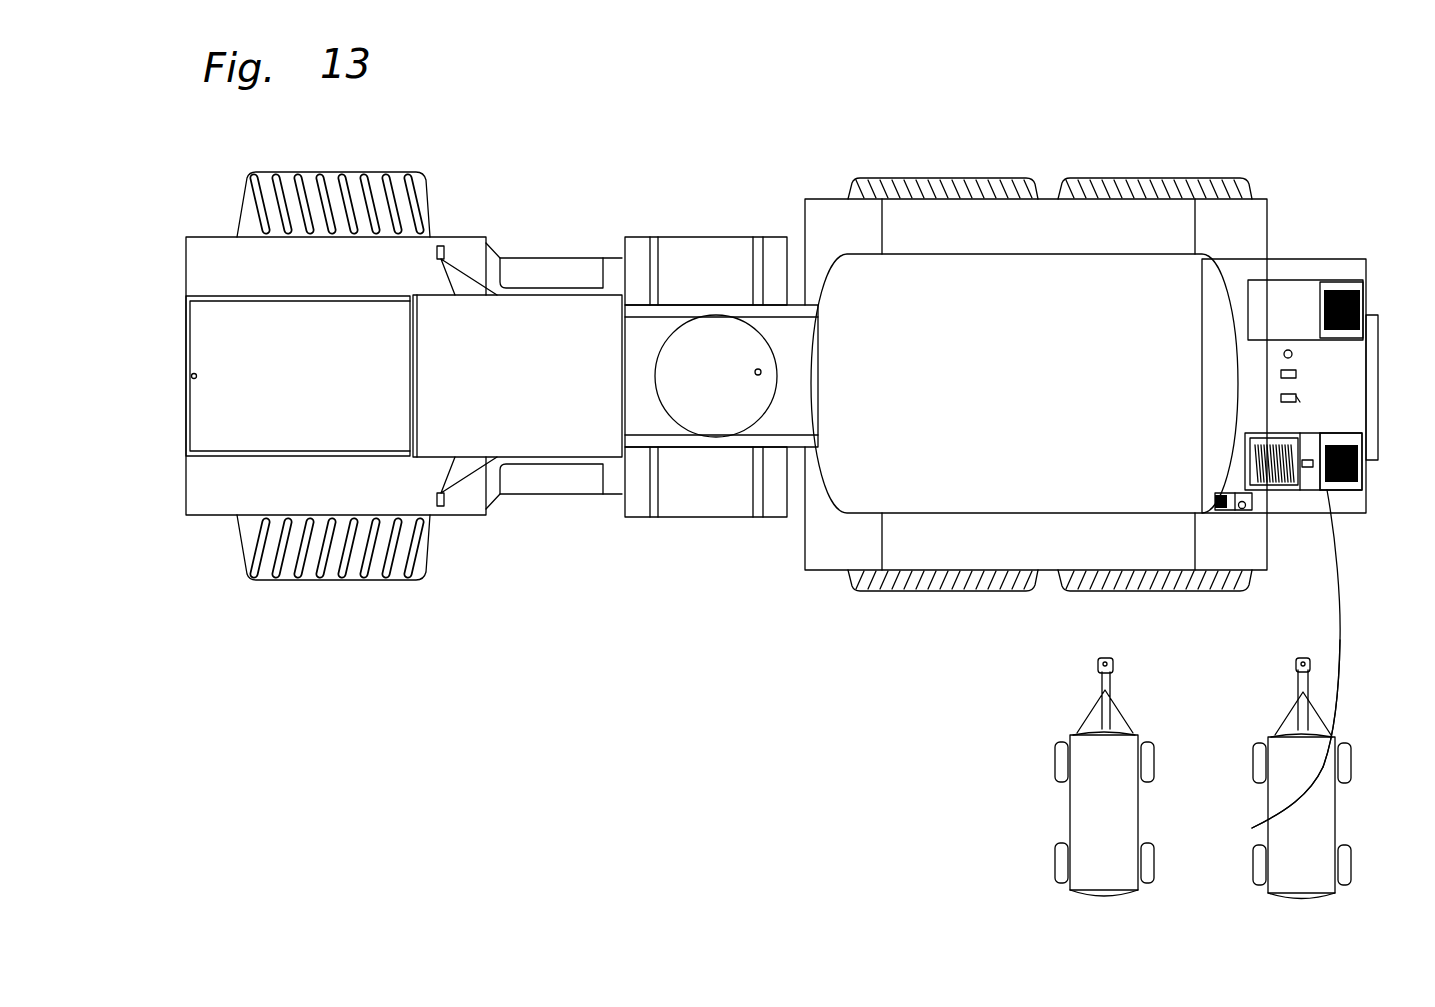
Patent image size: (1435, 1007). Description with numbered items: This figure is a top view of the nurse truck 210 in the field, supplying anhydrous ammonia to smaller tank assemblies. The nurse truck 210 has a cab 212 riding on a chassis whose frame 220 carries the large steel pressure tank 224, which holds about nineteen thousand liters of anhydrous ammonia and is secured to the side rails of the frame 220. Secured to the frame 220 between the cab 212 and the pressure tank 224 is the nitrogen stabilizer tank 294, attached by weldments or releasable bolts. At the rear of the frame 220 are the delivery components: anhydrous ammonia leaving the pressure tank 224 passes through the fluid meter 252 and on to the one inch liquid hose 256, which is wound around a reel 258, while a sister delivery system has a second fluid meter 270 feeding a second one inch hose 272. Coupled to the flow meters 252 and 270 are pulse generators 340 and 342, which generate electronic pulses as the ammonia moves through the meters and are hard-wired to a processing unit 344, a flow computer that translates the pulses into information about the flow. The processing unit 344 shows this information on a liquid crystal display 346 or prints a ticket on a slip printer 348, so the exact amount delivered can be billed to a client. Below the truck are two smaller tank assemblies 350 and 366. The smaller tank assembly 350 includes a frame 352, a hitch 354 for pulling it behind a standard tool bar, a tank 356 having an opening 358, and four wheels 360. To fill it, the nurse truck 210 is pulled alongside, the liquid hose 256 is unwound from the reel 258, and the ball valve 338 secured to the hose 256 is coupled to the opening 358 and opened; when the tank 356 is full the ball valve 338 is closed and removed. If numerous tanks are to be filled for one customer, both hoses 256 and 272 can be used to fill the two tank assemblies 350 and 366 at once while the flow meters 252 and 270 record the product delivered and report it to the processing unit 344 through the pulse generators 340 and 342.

The nurse truck 210 is at (355, 156).
The cab 212 is at (637, 206).
The frame 220 is at (801, 550).
The pressure tank 224 is at (1066, 386).
The nitrogen stabilizer tank 294 is at (758, 387).
The second fluid meter 270 is at (1297, 370).
The hose 272 is at (1350, 290).
The pulse generator 342 is at (1300, 380).
The fluid meter 252 is at (1300, 396).
The pulse generator 340 is at (1300, 402).
The reel 258 is at (1362, 480).
The liquid hose 256 is at (1331, 534).
The liquid crystal display 346 is at (1215, 495).
The processing unit 344 is at (1228, 512).
The slip printer 348 is at (1241, 512).
The tank assembly 366 is at (1058, 728).
The smaller tank assembly 350 is at (1344, 820).
The ball valve 338 is at (1350, 776).
The wheels 360 is at (1350, 877).
The frame 352 is at (1290, 720).
The hitch 354 is at (1298, 678).
The tank 356 is at (1340, 735).
The opening 358 is at (1263, 803).